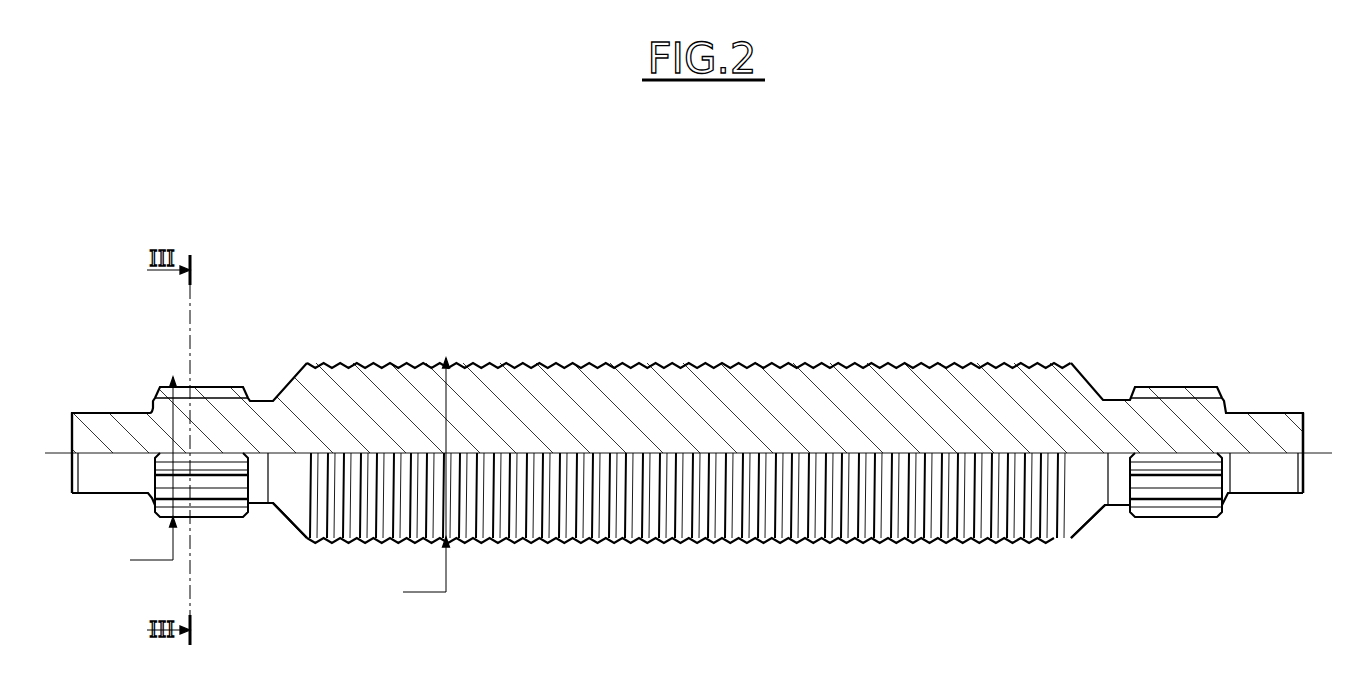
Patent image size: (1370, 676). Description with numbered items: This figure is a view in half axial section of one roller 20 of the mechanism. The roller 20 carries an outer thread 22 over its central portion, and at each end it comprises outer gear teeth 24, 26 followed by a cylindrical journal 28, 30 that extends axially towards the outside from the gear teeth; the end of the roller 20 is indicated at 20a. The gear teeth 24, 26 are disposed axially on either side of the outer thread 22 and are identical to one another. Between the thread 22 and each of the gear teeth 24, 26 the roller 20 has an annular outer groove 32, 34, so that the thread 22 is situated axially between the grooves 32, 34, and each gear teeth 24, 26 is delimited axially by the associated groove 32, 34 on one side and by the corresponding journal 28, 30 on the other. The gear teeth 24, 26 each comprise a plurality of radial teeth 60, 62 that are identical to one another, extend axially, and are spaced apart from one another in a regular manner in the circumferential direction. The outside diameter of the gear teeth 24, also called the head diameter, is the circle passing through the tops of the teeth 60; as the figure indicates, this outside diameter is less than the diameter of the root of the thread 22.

The roller 20 is at (753, 323).
The shaft end face 20a is at (1313, 452).
The outer thread 22 is at (820, 367).
The gear teeth 24 is at (177, 371).
The gear teeth 26 is at (1192, 383).
The cylindrical journal 28 is at (115, 418).
The cylindrical journal 30 is at (1263, 420).
The annular outer groove 32 is at (257, 505).
The annular outer groove 34 is at (1118, 505).
The radial teeth 60 is at (213, 386).
The radial teeth 62 is at (1143, 386).